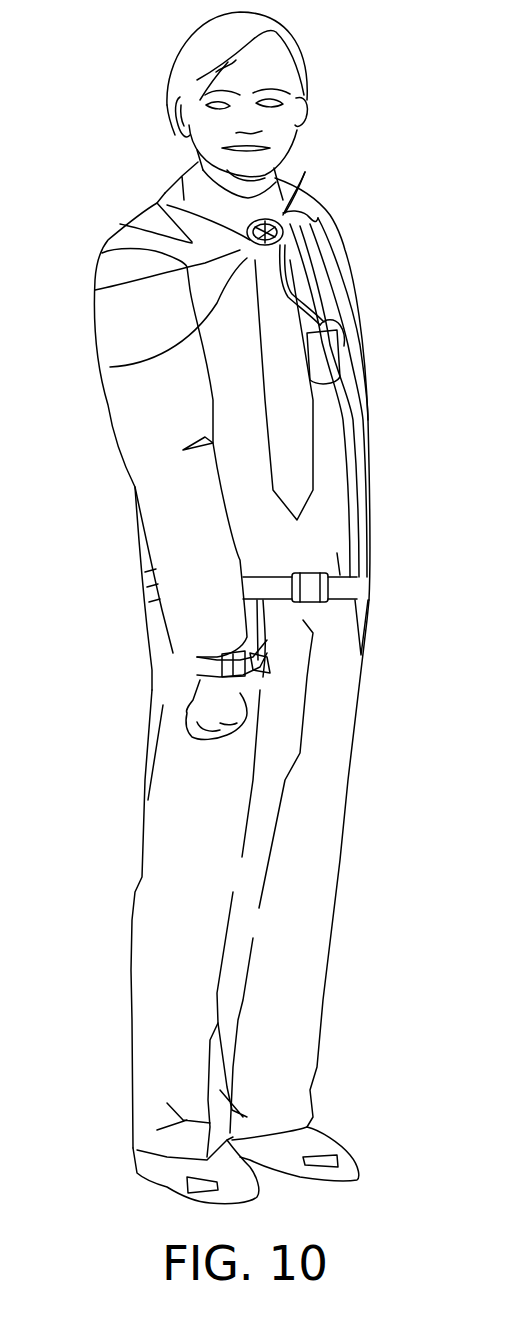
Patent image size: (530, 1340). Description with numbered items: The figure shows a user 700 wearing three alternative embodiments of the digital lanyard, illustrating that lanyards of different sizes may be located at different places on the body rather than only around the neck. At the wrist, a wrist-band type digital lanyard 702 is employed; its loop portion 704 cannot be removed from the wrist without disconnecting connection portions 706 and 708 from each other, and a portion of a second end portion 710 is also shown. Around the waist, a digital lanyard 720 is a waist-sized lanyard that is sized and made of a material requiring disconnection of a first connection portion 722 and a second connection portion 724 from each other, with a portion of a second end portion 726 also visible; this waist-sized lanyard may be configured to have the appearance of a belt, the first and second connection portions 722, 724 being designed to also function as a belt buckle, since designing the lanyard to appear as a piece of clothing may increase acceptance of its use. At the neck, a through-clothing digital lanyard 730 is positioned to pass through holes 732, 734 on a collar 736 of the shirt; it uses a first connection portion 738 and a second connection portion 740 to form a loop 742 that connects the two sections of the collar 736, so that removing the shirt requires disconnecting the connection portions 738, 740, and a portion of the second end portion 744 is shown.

The user 700 is at (170, 62).
The wrist-band type digital lanyard 702 is at (222, 651).
The loop portion 704 is at (197, 675).
The connection portion 706 is at (245, 700).
The connection portion 708 is at (257, 660).
The second end portion 710 is at (250, 650).
The digital lanyard 720 is at (328, 603).
The first connection portion 722 is at (303, 587).
The second connection portion 724 is at (340, 583).
The second end portion 726 is at (343, 507).
The through-clothing digital lanyard 730 is at (252, 234).
The hole 732 is at (120, 224).
The hole 734 is at (288, 207).
The collar 736 is at (327, 223).
The first connection portion 738 is at (110, 367).
The second connection portion 740 is at (283, 237).
The loop 742 is at (240, 250).
The second end portion 744 is at (288, 298).